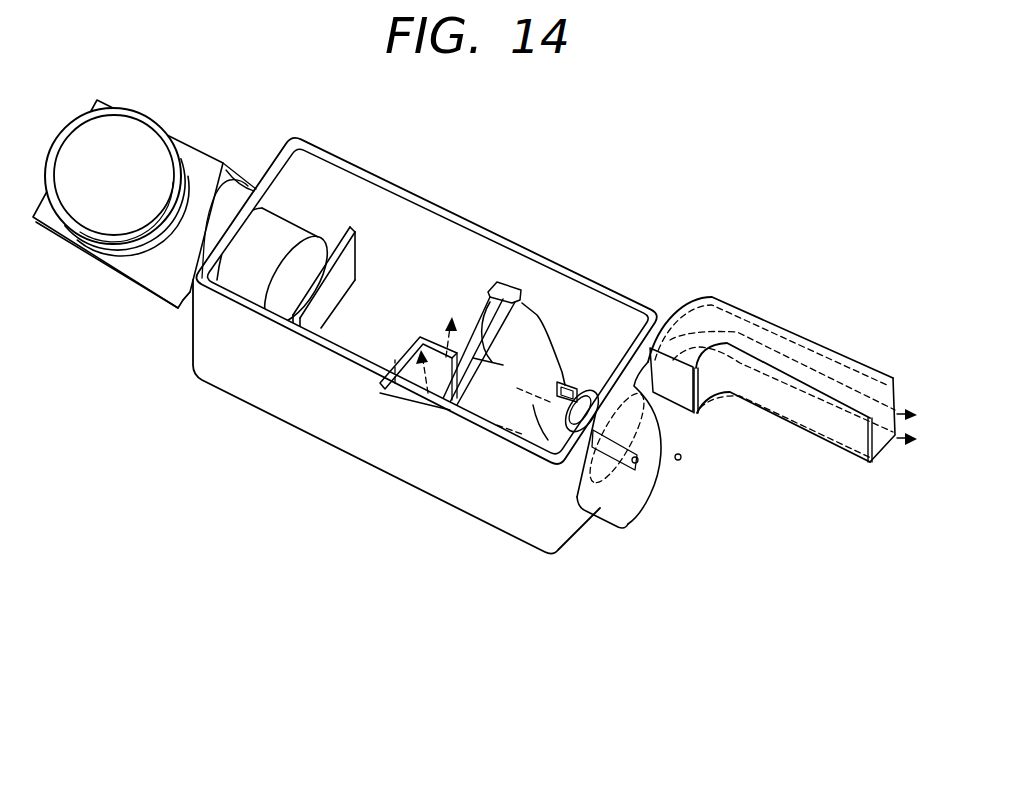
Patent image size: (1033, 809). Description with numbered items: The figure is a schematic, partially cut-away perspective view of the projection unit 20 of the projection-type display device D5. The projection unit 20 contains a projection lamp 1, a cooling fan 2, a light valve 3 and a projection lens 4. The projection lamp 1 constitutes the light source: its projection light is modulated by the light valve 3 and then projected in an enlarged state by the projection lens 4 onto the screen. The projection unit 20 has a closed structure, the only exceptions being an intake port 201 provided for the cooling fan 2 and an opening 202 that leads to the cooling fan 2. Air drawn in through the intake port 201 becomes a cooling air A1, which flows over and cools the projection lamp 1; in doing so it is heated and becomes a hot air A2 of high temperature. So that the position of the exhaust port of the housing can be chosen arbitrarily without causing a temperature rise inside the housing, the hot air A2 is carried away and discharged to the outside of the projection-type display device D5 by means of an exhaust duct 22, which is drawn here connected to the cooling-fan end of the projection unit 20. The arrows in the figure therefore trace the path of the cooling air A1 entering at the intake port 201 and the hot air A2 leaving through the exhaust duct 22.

The projection lens 4 is at (112, 270).
The light valve 3 is at (293, 322).
The projection lamp 1 is at (490, 404).
The projection unit 20 is at (227, 405).
The intake port 201 is at (410, 400).
The cooling air A1 is at (380, 350).
The cooling fan 2 is at (600, 510).
The opening 202 is at (698, 415).
The exhaust duct 22 is at (760, 388).
The hot air A2 is at (703, 340).
The projection-type display device D5 is at (181, 545).